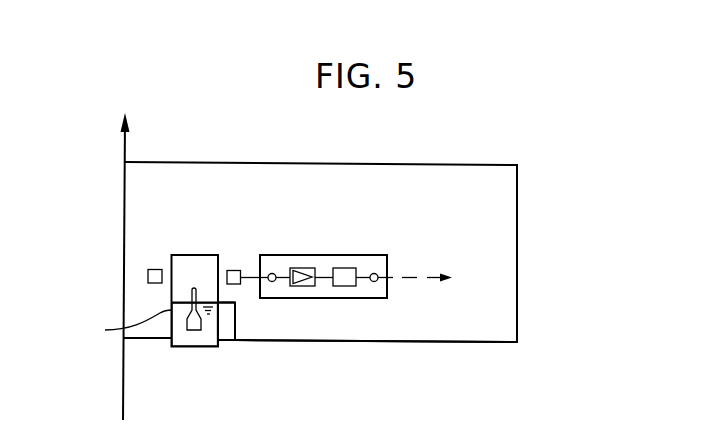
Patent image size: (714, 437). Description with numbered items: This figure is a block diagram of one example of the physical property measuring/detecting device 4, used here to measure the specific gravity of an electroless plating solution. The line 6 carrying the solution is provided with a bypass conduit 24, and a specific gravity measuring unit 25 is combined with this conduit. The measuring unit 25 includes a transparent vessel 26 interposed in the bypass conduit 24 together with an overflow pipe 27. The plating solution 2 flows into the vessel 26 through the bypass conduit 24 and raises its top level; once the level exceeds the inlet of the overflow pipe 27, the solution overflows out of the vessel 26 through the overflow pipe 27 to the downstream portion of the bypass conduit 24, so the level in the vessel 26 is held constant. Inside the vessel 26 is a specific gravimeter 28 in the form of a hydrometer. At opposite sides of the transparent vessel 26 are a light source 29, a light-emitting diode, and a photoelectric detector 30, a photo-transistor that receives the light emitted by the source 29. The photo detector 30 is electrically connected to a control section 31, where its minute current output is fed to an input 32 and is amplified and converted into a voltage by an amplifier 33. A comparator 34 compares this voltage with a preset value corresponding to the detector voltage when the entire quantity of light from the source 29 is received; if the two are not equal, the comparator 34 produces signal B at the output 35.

The plating solution 2 is at (204, 348).
The physical property measuring/detecting device 4 is at (299, 178).
The line 6 is at (123, 292).
The bypass conduit 24 is at (363, 343).
The specific gravity measuring unit 25 is at (198, 251).
The transparent vessel 26 is at (121, 326).
The overflow pipe 27 is at (237, 318).
The specific gravimeter 28 is at (191, 325).
The light source 29 is at (155, 269).
The photoelectric detector 30 is at (236, 270).
The control section 31 is at (376, 254).
The input 32 is at (272, 272).
The amplifier 33 is at (311, 287).
The comparator 34 is at (342, 267).
The output 35 is at (374, 282).